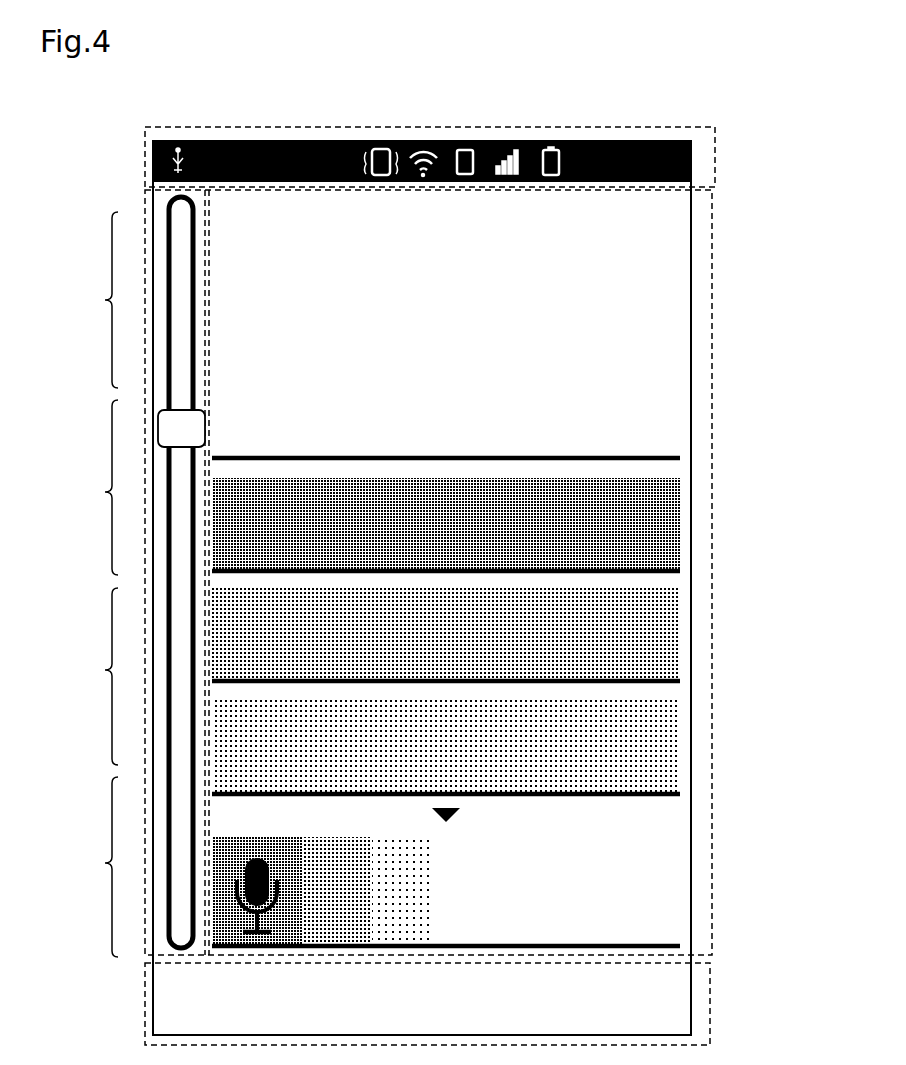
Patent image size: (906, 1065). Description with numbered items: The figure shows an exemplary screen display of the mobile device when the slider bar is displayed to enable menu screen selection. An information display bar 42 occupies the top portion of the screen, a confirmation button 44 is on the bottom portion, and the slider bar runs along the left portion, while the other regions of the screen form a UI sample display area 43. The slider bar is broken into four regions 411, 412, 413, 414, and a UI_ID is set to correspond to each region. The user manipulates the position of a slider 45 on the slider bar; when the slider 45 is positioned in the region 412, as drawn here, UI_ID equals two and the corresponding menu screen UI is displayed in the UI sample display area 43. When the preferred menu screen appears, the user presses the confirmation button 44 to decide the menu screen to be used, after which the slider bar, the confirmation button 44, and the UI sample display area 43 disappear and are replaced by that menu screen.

The information display bar 42 is at (716, 143).
The UI sample display area 43 is at (429, 573).
The confirmation button 44 is at (710, 980).
The slider 45 is at (163, 425).
The region 411 is at (84, 300).
The region 412 is at (365, 480).
The region 413 is at (365, 691).
The region 414 is at (364, 867).